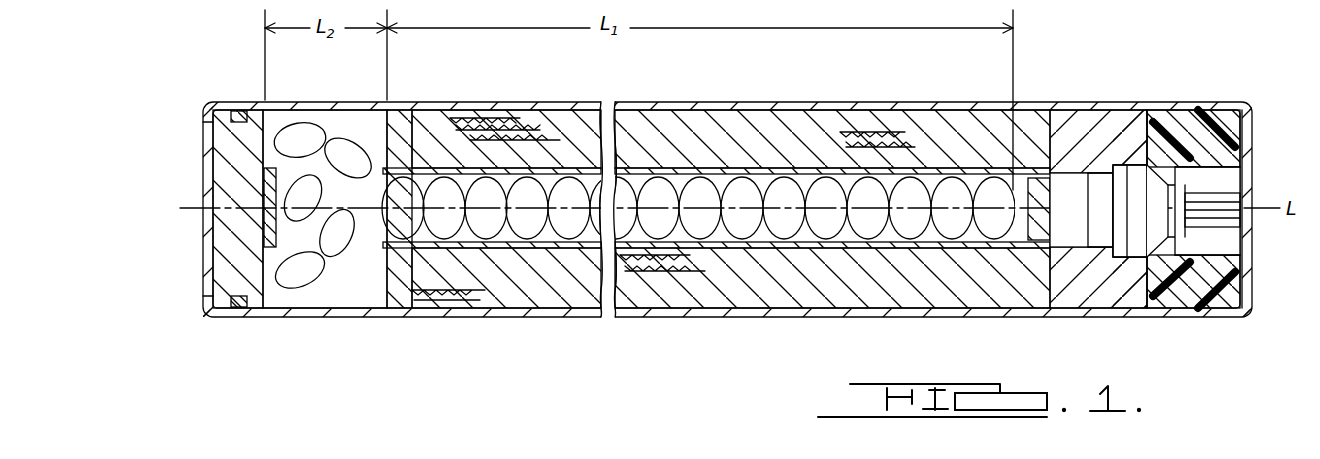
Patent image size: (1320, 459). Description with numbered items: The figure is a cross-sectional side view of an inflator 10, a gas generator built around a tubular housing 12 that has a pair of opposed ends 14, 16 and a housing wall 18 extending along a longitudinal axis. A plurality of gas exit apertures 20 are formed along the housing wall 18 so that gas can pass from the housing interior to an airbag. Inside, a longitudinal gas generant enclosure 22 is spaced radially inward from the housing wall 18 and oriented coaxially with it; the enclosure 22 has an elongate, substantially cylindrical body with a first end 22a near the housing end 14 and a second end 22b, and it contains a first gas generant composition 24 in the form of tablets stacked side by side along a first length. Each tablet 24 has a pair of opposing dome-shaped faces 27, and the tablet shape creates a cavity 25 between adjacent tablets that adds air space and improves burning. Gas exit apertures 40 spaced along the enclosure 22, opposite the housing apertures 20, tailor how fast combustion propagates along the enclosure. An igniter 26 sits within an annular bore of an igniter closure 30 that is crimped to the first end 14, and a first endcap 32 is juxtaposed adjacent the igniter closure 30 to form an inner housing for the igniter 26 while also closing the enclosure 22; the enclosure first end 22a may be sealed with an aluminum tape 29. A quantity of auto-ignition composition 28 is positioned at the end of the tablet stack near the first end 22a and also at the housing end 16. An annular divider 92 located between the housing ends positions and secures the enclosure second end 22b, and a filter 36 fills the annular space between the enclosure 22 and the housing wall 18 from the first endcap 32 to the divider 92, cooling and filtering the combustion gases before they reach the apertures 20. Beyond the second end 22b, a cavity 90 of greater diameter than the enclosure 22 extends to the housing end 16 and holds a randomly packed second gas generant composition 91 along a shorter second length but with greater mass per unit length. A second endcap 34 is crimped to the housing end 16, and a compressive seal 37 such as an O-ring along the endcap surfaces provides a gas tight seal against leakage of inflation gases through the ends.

The inflator 10 is at (944, 66).
The tubular housing 12 is at (548, 316).
The first end of housing 14 is at (1224, 98).
The second end of housing 16 is at (243, 328).
The housing wall 18 is at (662, 312).
The gas exit apertures 20 is at (790, 310).
The gas generant enclosure 22 is at (862, 248).
The first end of enclosure 22a is at (1040, 240).
The second end of enclosure 22b is at (490, 250).
The first gas generant composition 24 is at (782, 188).
The cavity between adjacent tablets 25 is at (672, 168).
The igniter 26 is at (1149, 110).
The dome-shaped faces 27 is at (838, 248).
The auto-ignition composition 28 is at (270, 168).
The aluminum tape 29 is at (1060, 190).
The igniter closure 30 is at (1210, 305).
The first endcap 32 is at (1110, 300).
The second endcap 34 is at (240, 252).
The filter 36 is at (968, 305).
The compressive seal 37 is at (238, 116).
The enclosure gas exit apertures 40 is at (555, 168).
The cavity 90 is at (335, 290).
The second gas generant composition 91 is at (345, 150).
The annular divider 92 is at (412, 308).